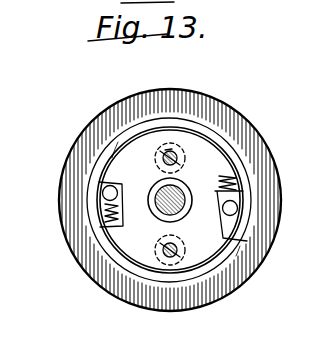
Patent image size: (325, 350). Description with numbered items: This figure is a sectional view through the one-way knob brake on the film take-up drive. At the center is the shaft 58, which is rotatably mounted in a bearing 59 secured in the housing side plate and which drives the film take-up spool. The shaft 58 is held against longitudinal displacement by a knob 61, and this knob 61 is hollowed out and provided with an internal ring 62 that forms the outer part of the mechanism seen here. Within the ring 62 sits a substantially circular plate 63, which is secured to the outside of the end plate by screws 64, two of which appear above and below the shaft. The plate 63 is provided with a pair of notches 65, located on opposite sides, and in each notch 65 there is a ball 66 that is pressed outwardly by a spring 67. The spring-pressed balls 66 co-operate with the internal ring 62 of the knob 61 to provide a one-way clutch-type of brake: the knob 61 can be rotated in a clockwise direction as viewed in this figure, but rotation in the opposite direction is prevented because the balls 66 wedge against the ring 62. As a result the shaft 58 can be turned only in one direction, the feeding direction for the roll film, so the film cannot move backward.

The shaft 58 is at (186, 216).
The bearing 59 is at (160, 213).
The knob 61 is at (228, 114).
The internal ring 62 is at (232, 152).
The circular plate 63 is at (128, 148).
The screws 64 is at (172, 152).
The notches 65 is at (112, 158).
The ball 66 is at (103, 193).
The spring 67 is at (104, 217).